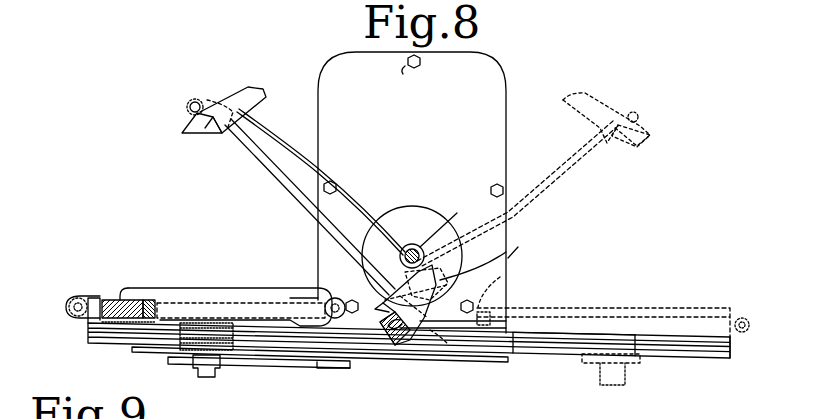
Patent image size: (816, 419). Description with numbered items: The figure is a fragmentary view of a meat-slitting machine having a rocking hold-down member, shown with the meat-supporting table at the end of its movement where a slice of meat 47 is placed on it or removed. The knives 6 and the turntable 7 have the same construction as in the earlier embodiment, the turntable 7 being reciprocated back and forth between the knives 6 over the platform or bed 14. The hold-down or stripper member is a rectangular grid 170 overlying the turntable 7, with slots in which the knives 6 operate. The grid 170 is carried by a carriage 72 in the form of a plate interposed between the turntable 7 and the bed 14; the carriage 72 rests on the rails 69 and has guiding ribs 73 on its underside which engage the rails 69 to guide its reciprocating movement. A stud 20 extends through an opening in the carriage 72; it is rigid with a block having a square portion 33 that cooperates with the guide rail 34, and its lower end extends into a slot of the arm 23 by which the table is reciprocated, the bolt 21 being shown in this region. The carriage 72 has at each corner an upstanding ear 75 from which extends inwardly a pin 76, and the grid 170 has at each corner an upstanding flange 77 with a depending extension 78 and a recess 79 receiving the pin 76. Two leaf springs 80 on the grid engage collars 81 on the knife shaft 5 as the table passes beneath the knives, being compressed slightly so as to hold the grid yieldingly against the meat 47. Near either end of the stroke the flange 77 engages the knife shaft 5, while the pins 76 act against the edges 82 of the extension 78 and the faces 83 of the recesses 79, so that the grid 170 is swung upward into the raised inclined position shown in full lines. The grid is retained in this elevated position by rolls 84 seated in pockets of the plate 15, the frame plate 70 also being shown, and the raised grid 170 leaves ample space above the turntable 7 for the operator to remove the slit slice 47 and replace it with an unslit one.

The knife shaft 5 is at (402, 248).
The knives 6 is at (415, 211).
The turntable 7 is at (113, 298).
The platform or bed 14 is at (735, 350).
The plate 15 is at (88, 337).
The stud 20 is at (220, 306).
The bolt 21 is at (225, 367).
The arm 23 is at (325, 364).
The square portion 33 is at (176, 350).
The guide rail 34 is at (132, 349).
The slice of meat 47 is at (160, 290).
The rails 69 is at (562, 338).
The frame plate 70 is at (492, 80).
The carriage 72 is at (143, 301).
The guiding ribs 73 is at (88, 325).
The upstanding ear 75 is at (70, 296).
The pin or projection 76 is at (80, 299).
The upstanding flange 77 is at (237, 95).
The depending extension 78 is at (182, 133).
The recess 79 is at (213, 120).
The leaf springs 80 is at (305, 165).
The collars 81 is at (450, 222).
The edges 82 is at (420, 332).
The faces 83 is at (386, 308).
The rolls 84 is at (195, 103).
The rectangular grid 170 is at (283, 185).